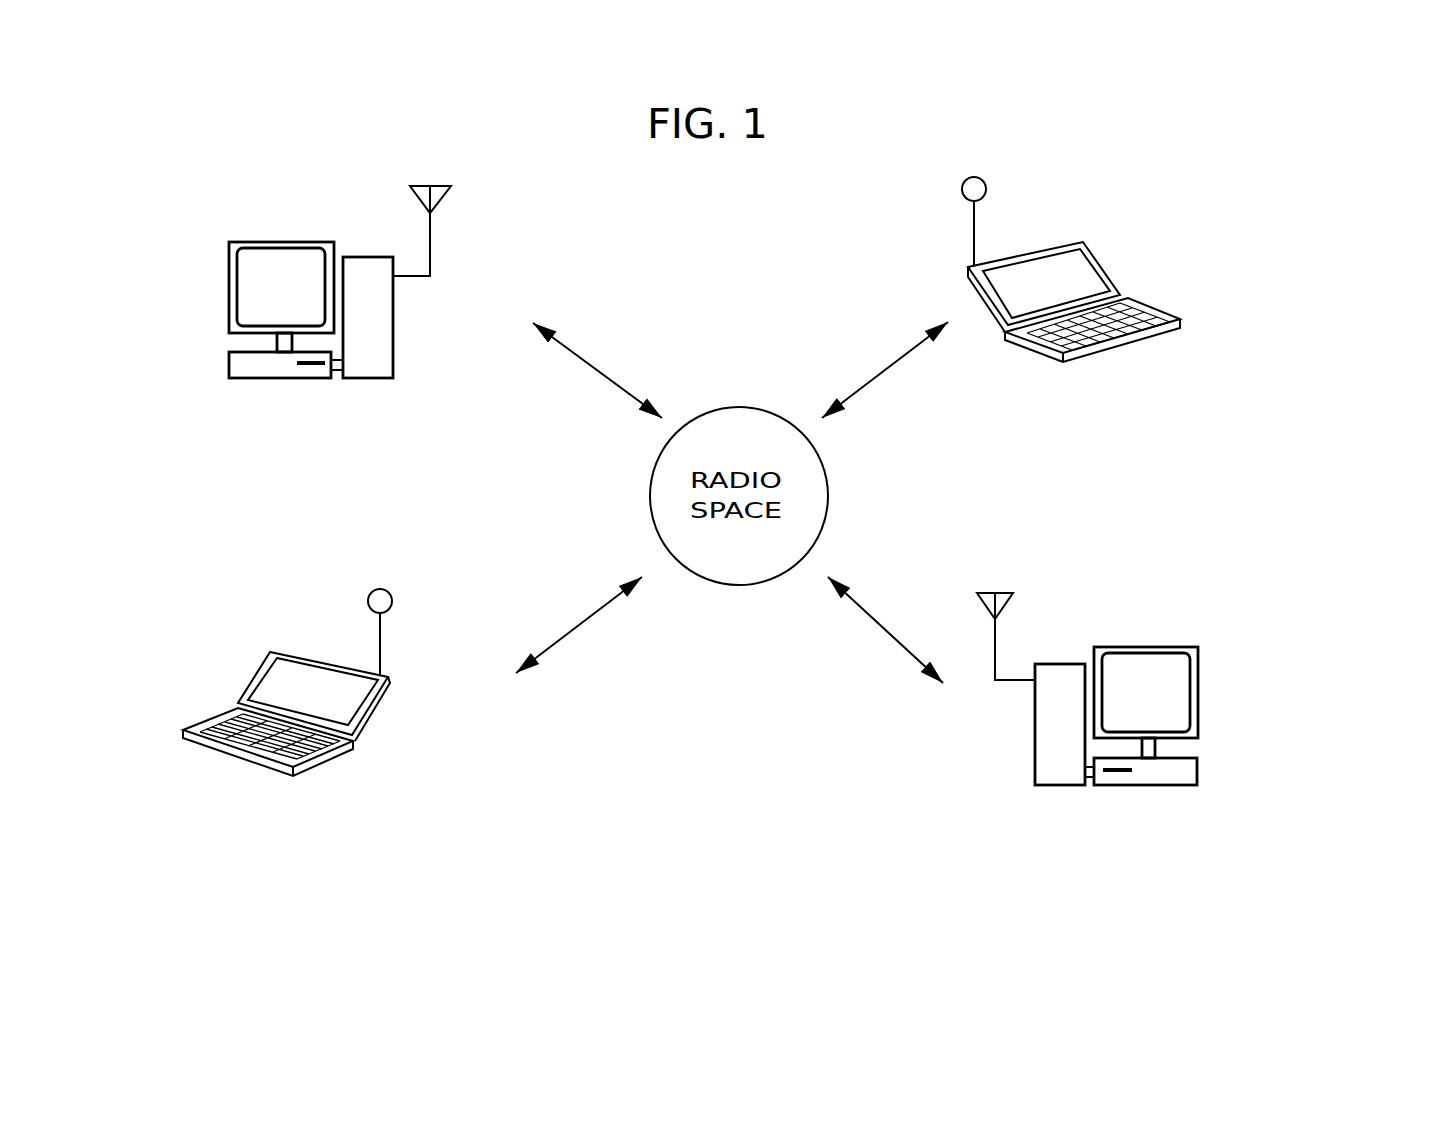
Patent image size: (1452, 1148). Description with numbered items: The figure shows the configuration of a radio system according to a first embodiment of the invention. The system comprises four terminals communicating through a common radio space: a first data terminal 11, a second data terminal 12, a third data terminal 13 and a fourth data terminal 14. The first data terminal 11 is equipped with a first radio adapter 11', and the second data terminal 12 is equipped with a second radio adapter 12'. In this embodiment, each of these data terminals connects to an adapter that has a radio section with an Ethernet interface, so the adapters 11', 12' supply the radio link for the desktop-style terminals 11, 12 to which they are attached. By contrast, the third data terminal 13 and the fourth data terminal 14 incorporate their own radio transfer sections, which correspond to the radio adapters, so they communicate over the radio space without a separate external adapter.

The first data terminal 11 is at (366, 364).
The first radio adapter 11' is at (447, 317).
The second data terminal 12 is at (1246, 753).
The second radio adapter 12' is at (1146, 745).
The third data terminal 13 is at (223, 748).
The fourth data terminal 14 is at (1050, 362).